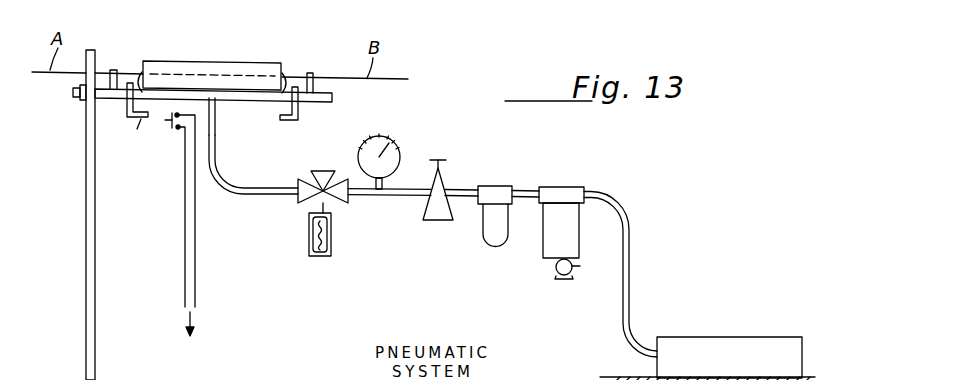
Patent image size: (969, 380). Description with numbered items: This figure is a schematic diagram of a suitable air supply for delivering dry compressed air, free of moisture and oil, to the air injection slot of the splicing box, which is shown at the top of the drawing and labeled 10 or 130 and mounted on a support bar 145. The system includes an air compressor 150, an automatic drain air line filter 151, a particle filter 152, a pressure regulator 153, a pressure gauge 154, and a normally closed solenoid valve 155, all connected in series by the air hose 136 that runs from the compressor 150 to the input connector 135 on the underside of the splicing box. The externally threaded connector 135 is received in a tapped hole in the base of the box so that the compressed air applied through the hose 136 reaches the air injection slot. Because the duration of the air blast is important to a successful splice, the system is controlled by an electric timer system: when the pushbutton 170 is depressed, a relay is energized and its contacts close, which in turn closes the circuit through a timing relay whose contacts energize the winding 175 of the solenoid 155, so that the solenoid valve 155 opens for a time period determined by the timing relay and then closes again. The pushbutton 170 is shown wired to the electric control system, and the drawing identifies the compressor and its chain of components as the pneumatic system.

The press section / apparatus 10 is at (212, 45).
The press section body 130 is at (248, 40).
The externally threaded connector 135 is at (218, 106).
The flexible hose 136 is at (211, 166).
The support bar 145 is at (259, 100).
The air compressor 150 is at (738, 337).
The automatic drain air line filter 151 is at (563, 187).
The particle filter 152 is at (517, 168).
The pressure regulator 153 is at (442, 160).
The pressure gauge 154 is at (396, 146).
The normally closed solenoid valve 155 is at (321, 162).
The pushbutton 170 is at (170, 130).
The winding 175 is at (337, 238).